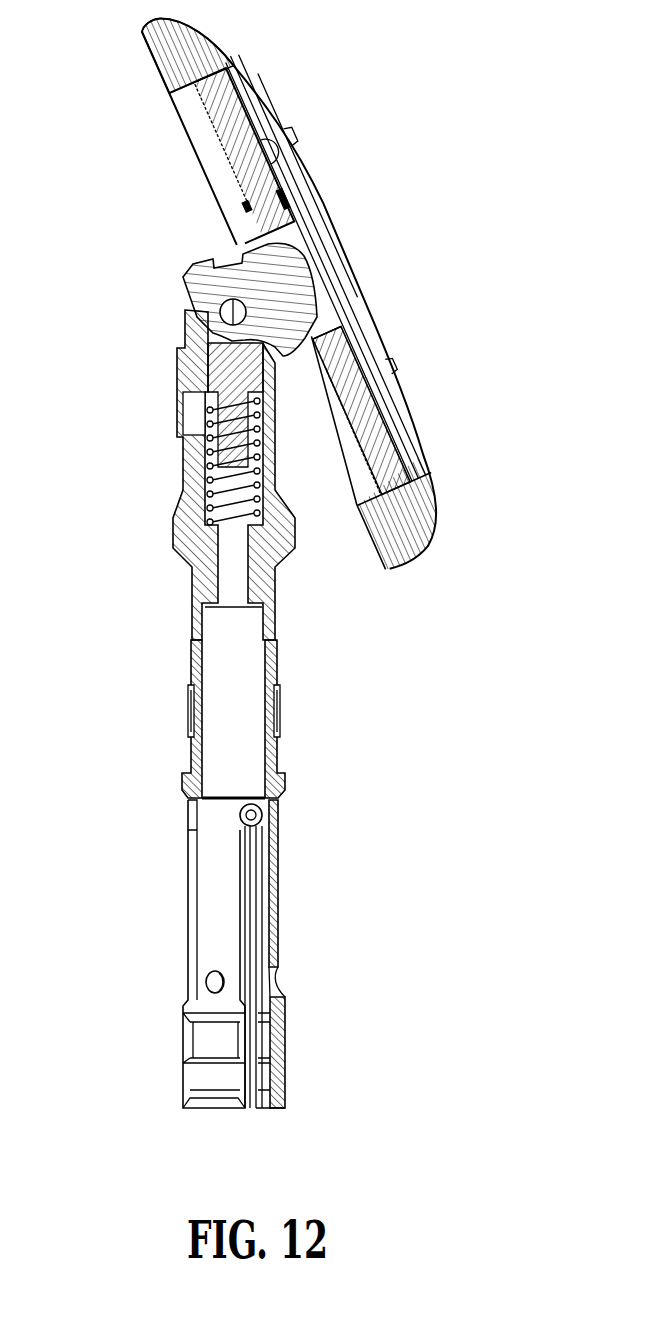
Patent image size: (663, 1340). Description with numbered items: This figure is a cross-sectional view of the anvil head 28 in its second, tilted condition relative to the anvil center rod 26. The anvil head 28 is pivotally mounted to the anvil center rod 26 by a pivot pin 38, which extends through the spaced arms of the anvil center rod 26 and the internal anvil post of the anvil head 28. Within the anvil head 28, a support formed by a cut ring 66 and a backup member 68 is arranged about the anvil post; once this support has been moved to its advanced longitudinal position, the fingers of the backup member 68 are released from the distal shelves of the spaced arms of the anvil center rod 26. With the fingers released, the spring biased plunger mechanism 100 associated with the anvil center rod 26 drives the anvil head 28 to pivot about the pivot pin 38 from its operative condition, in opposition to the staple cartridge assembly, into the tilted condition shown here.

The anvil head 28 is at (347, 244).
The pivot pin 38 is at (183, 276).
The spring biased plunger mechanism 100 is at (177, 379).
The backup member 68 is at (362, 406).
The cut ring 66 is at (362, 453).
The anvil center rod 26 is at (278, 757).